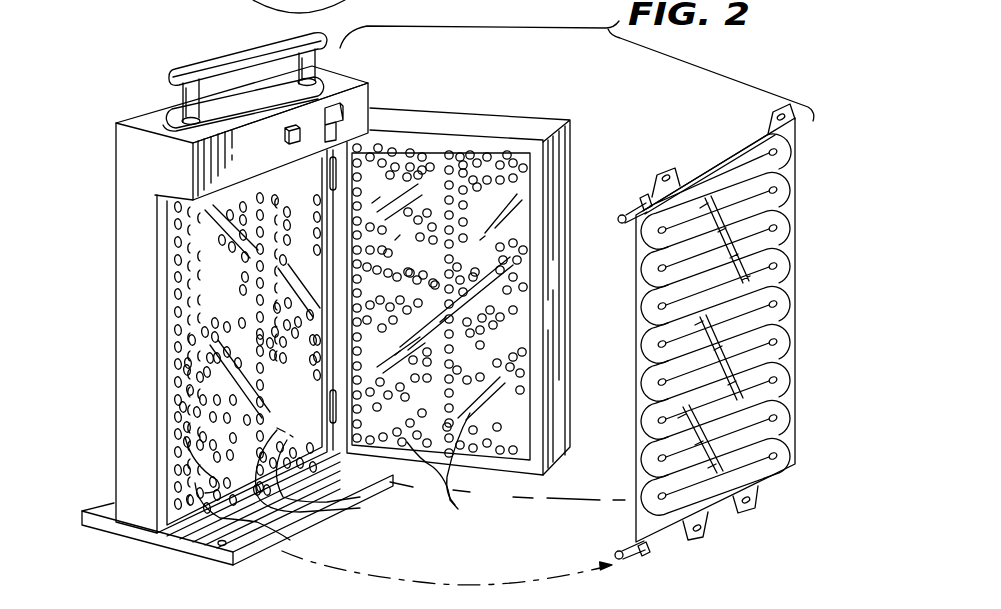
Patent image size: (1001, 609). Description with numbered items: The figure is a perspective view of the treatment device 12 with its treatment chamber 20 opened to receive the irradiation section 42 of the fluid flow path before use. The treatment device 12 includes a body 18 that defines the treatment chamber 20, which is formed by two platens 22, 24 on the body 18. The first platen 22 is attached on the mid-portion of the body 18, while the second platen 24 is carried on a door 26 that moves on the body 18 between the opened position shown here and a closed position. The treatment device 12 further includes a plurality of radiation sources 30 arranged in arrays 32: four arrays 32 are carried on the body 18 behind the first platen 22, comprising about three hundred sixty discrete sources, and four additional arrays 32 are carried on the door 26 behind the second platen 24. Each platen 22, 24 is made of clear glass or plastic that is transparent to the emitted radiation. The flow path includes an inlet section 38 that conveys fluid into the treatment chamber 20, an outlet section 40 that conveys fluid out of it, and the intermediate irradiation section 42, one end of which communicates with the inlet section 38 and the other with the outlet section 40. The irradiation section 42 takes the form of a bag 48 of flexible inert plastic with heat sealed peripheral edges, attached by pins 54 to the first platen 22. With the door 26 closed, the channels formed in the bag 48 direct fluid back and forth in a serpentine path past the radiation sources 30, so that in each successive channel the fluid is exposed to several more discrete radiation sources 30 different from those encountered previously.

The treatment device 12 is at (385, 96).
The body 18 is at (138, 157).
The treatment chamber 20 is at (222, 303).
The first platen 22 is at (210, 230).
The second platen 24 is at (494, 193).
The door 26 is at (445, 118).
The radiation sources 30 is at (177, 317).
The arrays 32 is at (231, 142).
The inlet section 38 is at (620, 560).
The outlet section 40 is at (621, 215).
The irradiation section 42 is at (805, 266).
The irradiation section bag 48 is at (795, 163).
The pins 54 is at (207, 465).